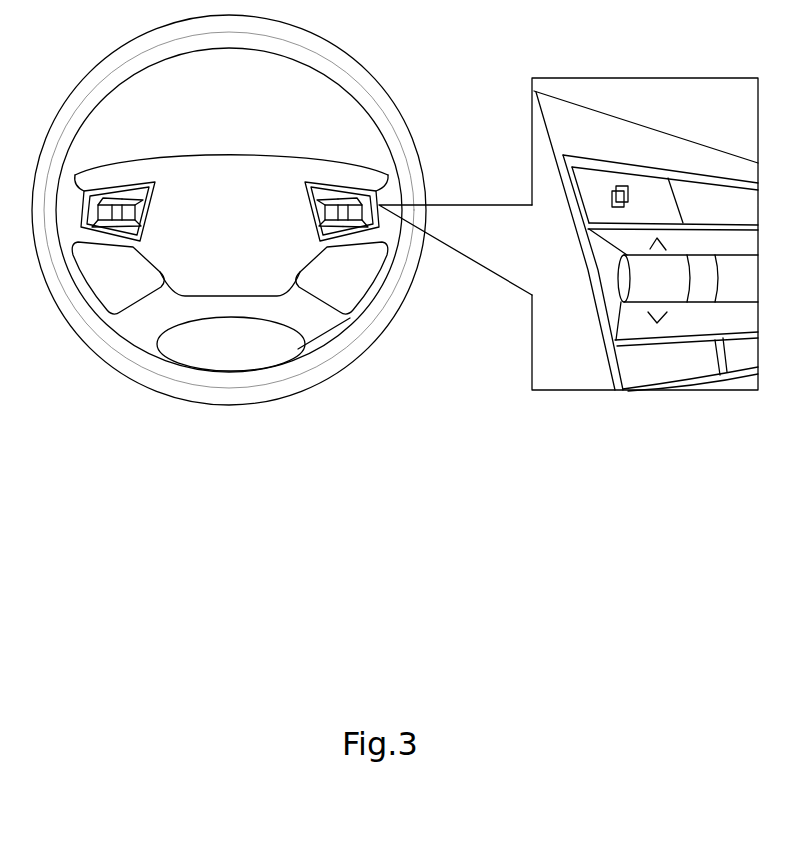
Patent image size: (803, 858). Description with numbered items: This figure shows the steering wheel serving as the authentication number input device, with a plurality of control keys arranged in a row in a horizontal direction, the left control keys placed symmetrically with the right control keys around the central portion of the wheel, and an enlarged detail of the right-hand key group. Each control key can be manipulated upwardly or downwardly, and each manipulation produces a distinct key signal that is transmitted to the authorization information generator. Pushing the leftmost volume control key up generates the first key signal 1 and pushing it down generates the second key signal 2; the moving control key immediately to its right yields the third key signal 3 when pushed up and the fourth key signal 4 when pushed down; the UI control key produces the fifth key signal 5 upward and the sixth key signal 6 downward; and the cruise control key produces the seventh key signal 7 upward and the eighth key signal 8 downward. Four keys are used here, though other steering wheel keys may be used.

The first key signal 1 is at (105, 197).
The second key signal 2 is at (105, 228).
The third key signal 3 is at (132, 197).
The fourth key signal 4 is at (130, 228).
The fifth key signal 5 is at (332, 197).
The sixth key signal 6 is at (332, 228).
The seventh key signal 7 is at (357, 197).
The eighth key signal 8 is at (355, 228).